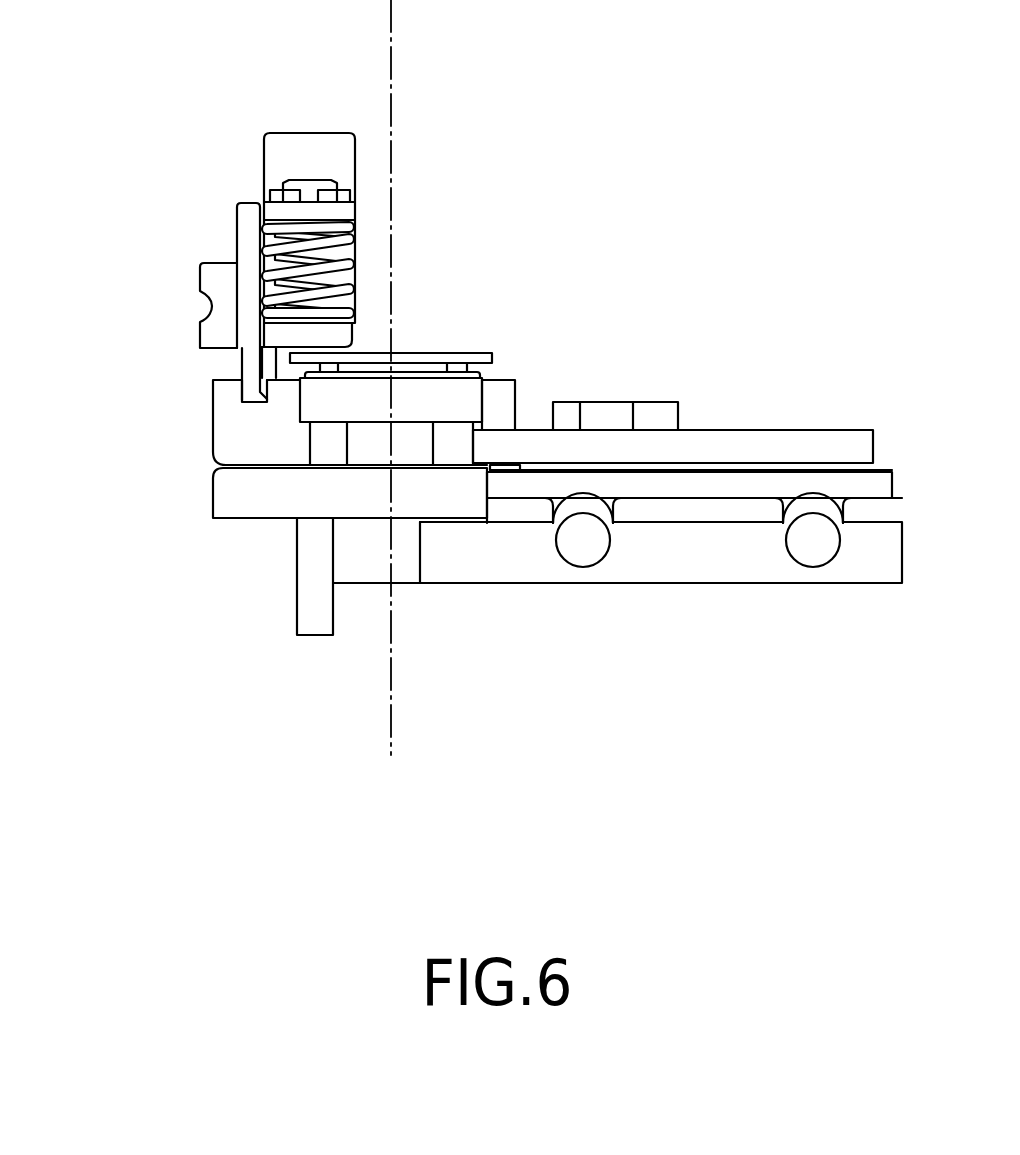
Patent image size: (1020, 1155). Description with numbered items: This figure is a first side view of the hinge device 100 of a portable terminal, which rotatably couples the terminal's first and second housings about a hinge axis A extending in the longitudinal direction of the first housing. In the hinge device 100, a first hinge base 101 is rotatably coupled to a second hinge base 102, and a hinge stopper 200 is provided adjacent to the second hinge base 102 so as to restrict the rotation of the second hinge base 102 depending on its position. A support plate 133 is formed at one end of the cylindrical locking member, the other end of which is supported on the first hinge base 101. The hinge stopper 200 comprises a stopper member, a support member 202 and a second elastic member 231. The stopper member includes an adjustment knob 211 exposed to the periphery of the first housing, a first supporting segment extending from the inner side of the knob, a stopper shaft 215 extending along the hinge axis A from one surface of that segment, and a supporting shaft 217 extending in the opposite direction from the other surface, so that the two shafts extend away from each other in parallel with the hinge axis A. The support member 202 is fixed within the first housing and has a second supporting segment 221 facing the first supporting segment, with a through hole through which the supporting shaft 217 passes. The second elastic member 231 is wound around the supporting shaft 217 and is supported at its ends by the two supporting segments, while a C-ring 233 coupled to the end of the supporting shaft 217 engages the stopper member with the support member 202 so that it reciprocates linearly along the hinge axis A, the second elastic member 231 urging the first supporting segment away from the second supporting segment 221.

The hinge device 100 is at (741, 77).
The first hinge base 101 is at (272, 588).
The second hinge base 102 is at (786, 421).
The support plate 133 is at (492, 357).
The hinge stopper 200 is at (178, 246).
The support member 202 is at (306, 148).
The adjustment knob 211 is at (217, 307).
The stopper shaft 215 is at (270, 366).
The supporting shaft 217 is at (345, 298).
The second supporting segment 221 is at (343, 214).
The second elastic member 231 is at (343, 268).
The C-ring 233 is at (343, 196).
The hinge axis A is at (392, 691).